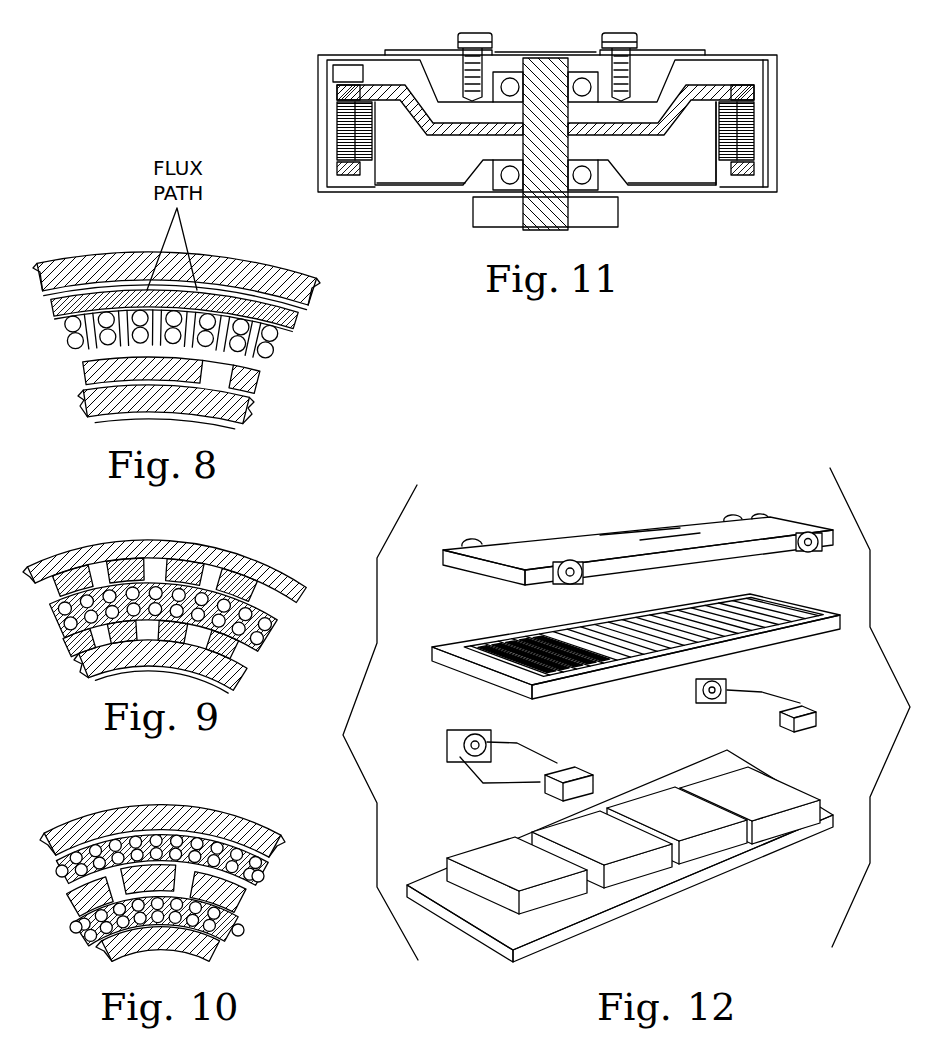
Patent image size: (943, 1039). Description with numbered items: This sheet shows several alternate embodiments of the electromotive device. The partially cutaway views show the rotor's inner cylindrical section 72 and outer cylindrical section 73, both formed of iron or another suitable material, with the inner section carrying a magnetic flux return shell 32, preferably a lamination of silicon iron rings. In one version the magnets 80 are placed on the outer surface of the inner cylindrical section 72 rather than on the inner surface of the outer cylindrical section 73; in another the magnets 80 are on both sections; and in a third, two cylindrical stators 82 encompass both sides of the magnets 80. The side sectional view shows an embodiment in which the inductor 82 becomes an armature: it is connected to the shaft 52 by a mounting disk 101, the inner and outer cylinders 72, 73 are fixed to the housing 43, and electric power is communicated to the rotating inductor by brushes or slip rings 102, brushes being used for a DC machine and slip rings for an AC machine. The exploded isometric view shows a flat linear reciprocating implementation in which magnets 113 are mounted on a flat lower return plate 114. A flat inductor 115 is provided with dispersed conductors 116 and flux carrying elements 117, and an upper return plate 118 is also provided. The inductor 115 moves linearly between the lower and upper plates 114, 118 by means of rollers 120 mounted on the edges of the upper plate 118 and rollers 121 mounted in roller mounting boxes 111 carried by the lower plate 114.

In FIG. 11, the shell 32 is at (730, 173).
In FIG. 8, the housing 43 is at (233, 257).
In FIG. 11, the housing 43 is at (770, 70).
In FIG. 11, the shaft 52 is at (548, 62).
In FIG. 8, the inner cylindrical section 72 is at (267, 420).
In FIG. 9, the inner cylindrical section 72 is at (250, 680).
In FIG. 10, the inner cylindrical section 72 is at (227, 943).
In FIG. 11, the inner cylindrical section 72 is at (717, 185).
In FIG. 8, the outer cylindrical section 73 is at (302, 320).
In FIG. 9, the outer cylindrical section 73 is at (293, 597).
In FIG. 10, the outer cylindrical section 73 is at (255, 832).
In FIG. 11, the outer cylindrical section 73 is at (763, 163).
In FIG. 8, the magnets 80 is at (267, 390).
In FIG. 9, the magnets 80 is at (265, 643).
In FIG. 10, the magnets 80 is at (242, 893).
In FIG. 8, the inductor 82 is at (120, 310).
In FIG. 9, the inductor 82 is at (205, 592).
In FIG. 10, the inductor 82 is at (255, 858).
In FIG. 11, the inductor 82 is at (343, 173).
In FIG. 11, the mounting disk 101 is at (385, 82).
In FIG. 11, the brushes or slip rings 102 is at (343, 65).
In FIG. 12, the roller mounting boxes 111 is at (780, 717).
In FIG. 12, the magnets 113 is at (693, 780).
In FIG. 12, the lower return plate 114 is at (713, 880).
In FIG. 12, the inductor 115 is at (636, 663).
In FIG. 12, the dispersed conductors 116 is at (520, 642).
In FIG. 12, the flux carrying elements 117 is at (583, 657).
In FIG. 12, the upper return plate 118 is at (620, 532).
In FIG. 12, the rollers 120 is at (475, 540).
In FIG. 12, the rollers 121 is at (623, 723).